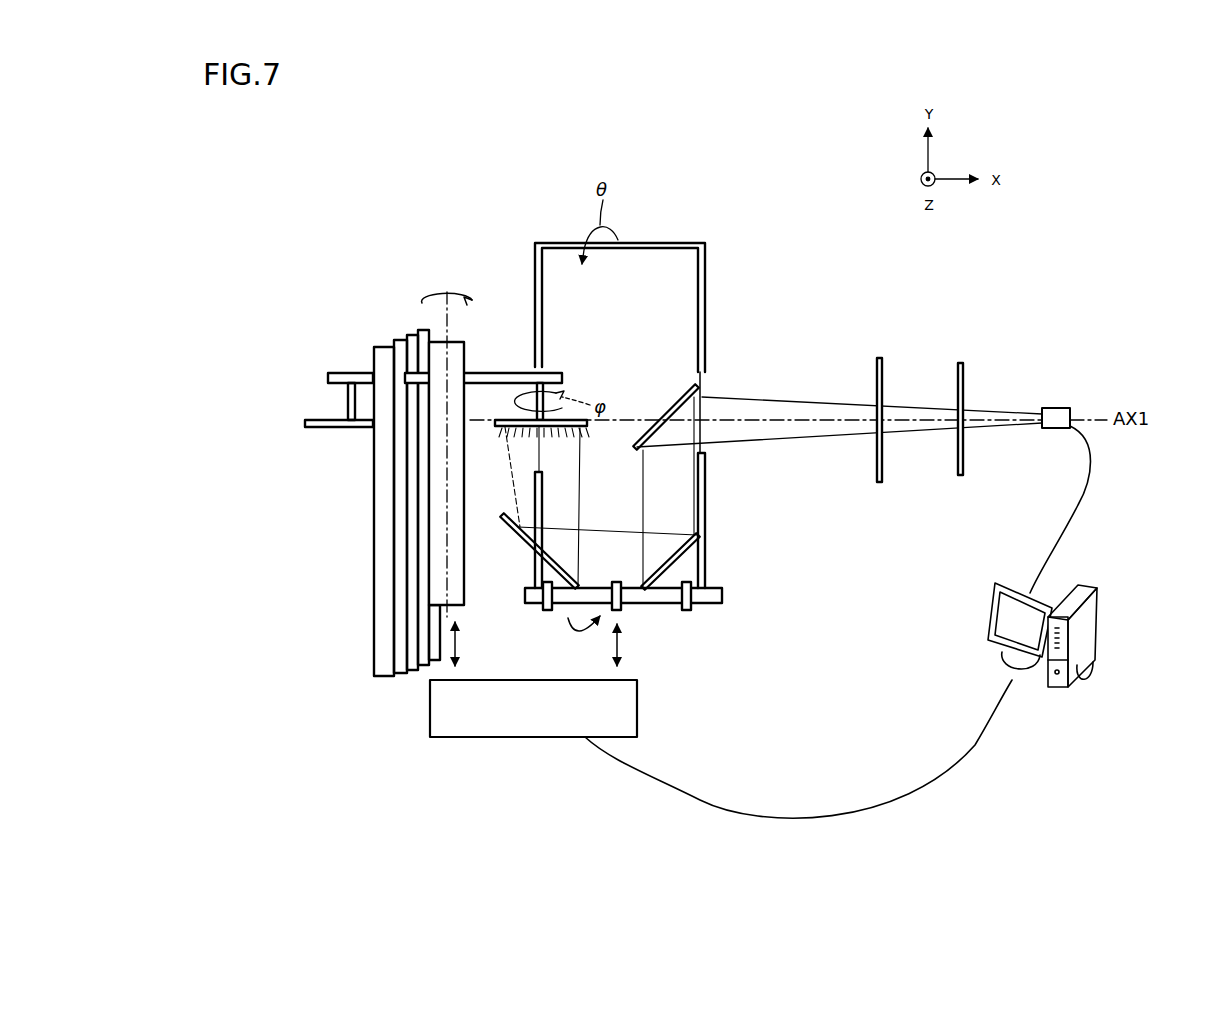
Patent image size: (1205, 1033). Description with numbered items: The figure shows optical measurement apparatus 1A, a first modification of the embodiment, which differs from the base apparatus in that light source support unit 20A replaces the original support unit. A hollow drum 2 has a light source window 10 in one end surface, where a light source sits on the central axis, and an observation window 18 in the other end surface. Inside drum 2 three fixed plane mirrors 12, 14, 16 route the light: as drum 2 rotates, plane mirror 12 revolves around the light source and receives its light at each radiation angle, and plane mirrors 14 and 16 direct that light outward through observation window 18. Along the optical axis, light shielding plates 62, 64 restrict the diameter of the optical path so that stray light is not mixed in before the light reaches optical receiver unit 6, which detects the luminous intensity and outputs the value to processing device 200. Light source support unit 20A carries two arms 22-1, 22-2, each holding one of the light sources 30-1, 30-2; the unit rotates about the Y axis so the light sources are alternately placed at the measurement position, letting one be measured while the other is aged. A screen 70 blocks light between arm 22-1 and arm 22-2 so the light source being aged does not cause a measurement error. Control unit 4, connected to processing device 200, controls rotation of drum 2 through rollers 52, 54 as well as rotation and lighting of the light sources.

The optical measurement apparatus 1A is at (1093, 244).
The drum 2 is at (665, 255).
The control unit 4 is at (463, 737).
The optical receiver unit 6 is at (1052, 408).
The light source window 10 is at (549, 366).
The plane mirror 12 is at (528, 547).
The plane mirror 14 is at (673, 403).
The plane mirror 16 is at (677, 563).
The observation window 18 is at (715, 382).
The light source support unit 20A is at (455, 340).
The arm 22-1 is at (553, 391).
The arm 22-2 is at (347, 405).
The first sample stage 30-1 is at (505, 420).
The second sample stage 30-2 is at (327, 428).
The roller 52 is at (707, 598).
The roller 54 is at (617, 596).
The light shielding plate 62 is at (882, 370).
The light shielding plate 64 is at (963, 370).
The screen 70 is at (382, 608).
The processing device 200 is at (1100, 640).